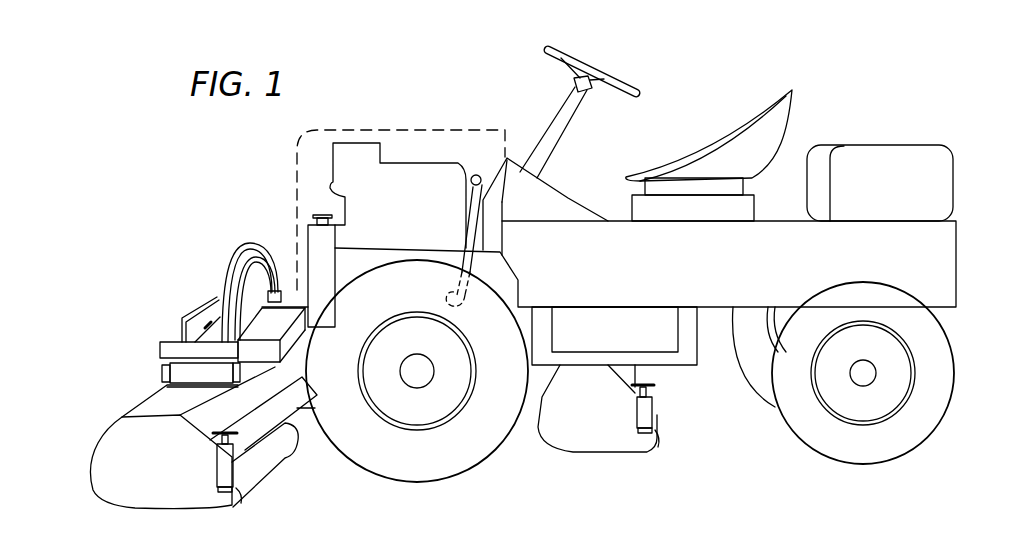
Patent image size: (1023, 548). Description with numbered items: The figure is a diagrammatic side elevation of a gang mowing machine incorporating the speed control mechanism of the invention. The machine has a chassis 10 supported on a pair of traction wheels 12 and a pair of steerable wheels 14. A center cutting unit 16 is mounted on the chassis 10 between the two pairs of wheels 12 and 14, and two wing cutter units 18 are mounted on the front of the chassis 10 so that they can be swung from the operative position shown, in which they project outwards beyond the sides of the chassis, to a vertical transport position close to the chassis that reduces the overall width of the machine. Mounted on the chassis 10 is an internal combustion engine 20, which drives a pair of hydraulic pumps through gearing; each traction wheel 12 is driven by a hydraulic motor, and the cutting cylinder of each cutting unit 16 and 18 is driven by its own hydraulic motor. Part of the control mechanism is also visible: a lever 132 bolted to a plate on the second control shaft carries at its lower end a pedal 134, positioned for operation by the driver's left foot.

The chassis 10 is at (720, 296).
The traction wheels 12 is at (487, 447).
The steerable wheels 14 is at (938, 427).
The center cutting unit 16 is at (602, 437).
The wing cutter units 18 is at (115, 443).
The internal combustion engine 20 is at (418, 221).
The lever 132 is at (478, 186).
The pedal 134 is at (446, 300).